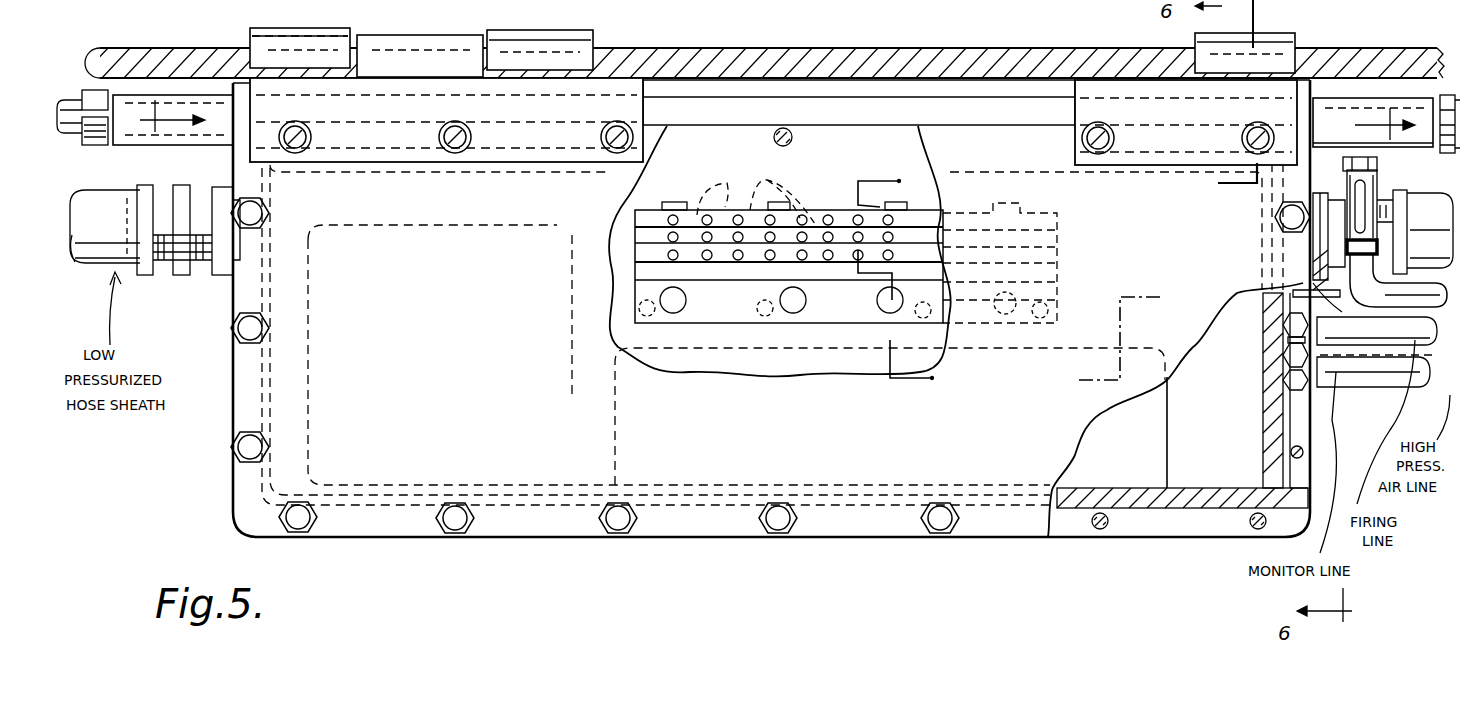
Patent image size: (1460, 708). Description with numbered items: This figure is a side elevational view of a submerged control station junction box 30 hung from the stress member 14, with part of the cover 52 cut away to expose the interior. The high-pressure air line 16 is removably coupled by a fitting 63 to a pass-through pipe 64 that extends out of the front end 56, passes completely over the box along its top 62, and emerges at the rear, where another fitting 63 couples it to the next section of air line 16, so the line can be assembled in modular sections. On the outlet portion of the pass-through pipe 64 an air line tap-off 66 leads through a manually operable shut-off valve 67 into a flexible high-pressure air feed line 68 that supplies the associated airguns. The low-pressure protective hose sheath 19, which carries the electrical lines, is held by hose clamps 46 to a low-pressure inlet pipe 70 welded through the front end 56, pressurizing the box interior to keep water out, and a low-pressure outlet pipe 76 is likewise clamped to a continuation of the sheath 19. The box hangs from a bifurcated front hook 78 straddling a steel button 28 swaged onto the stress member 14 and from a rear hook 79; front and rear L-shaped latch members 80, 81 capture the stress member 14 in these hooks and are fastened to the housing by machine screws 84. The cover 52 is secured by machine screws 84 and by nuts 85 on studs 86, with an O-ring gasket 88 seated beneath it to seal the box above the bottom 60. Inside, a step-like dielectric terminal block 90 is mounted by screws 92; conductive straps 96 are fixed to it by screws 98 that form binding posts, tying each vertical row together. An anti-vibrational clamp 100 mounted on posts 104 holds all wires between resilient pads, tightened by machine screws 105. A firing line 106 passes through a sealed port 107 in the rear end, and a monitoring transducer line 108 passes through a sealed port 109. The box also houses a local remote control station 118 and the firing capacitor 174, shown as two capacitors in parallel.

The stress member 14 is at (760, 50).
The high-pressure air line 16 is at (68, 140).
The low-pressure protective hose sheath 19 is at (90, 268).
The steel button 28 is at (420, 46).
The junction box 30 is at (510, 543).
The hose clamp 46 is at (145, 278).
The cover 52 is at (1070, 423).
The front end 56 is at (232, 292).
The bottom 60 is at (663, 540).
The top 62 is at (985, 124).
The fitting 63 is at (96, 146).
The pass-through pipe 64 is at (878, 103).
The air line tap-off 66 is at (1400, 170).
The manually operable shut-off valve 67 is at (1362, 220).
The flexible high-pressure air feed line 68 is at (1413, 298).
The low-pressure inlet pipe 70 is at (205, 268).
The low-pressure outlet pipe 76 is at (312, 30).
The front hanger or hook 78 is at (555, 28).
The rear hanger or hook 79 is at (1258, 46).
The front L-shaped latch member 80 is at (425, 166).
The rear L-shaped latch member 81 is at (1170, 170).
The machine screw 84 is at (298, 154).
The nut 85 is at (318, 528).
The stud 86 is at (791, 131).
The O-ring gasket 88 is at (363, 163).
The terminal block 90 is at (625, 226).
The screw 92 is at (671, 203).
The conductive strap 96 is at (722, 187).
The screw 98 is at (783, 193).
The anti-vibrational clamp 100 is at (735, 328).
The post 104 is at (767, 318).
The machine screw 105 is at (678, 315).
The firing line 106 is at (1293, 285).
The port 107 is at (1283, 335).
The monitoring transducer line 108 is at (1365, 366).
The port 109 is at (1205, 432).
The local remote control station 118 is at (578, 392).
The firing capacitor 174 is at (1180, 466).